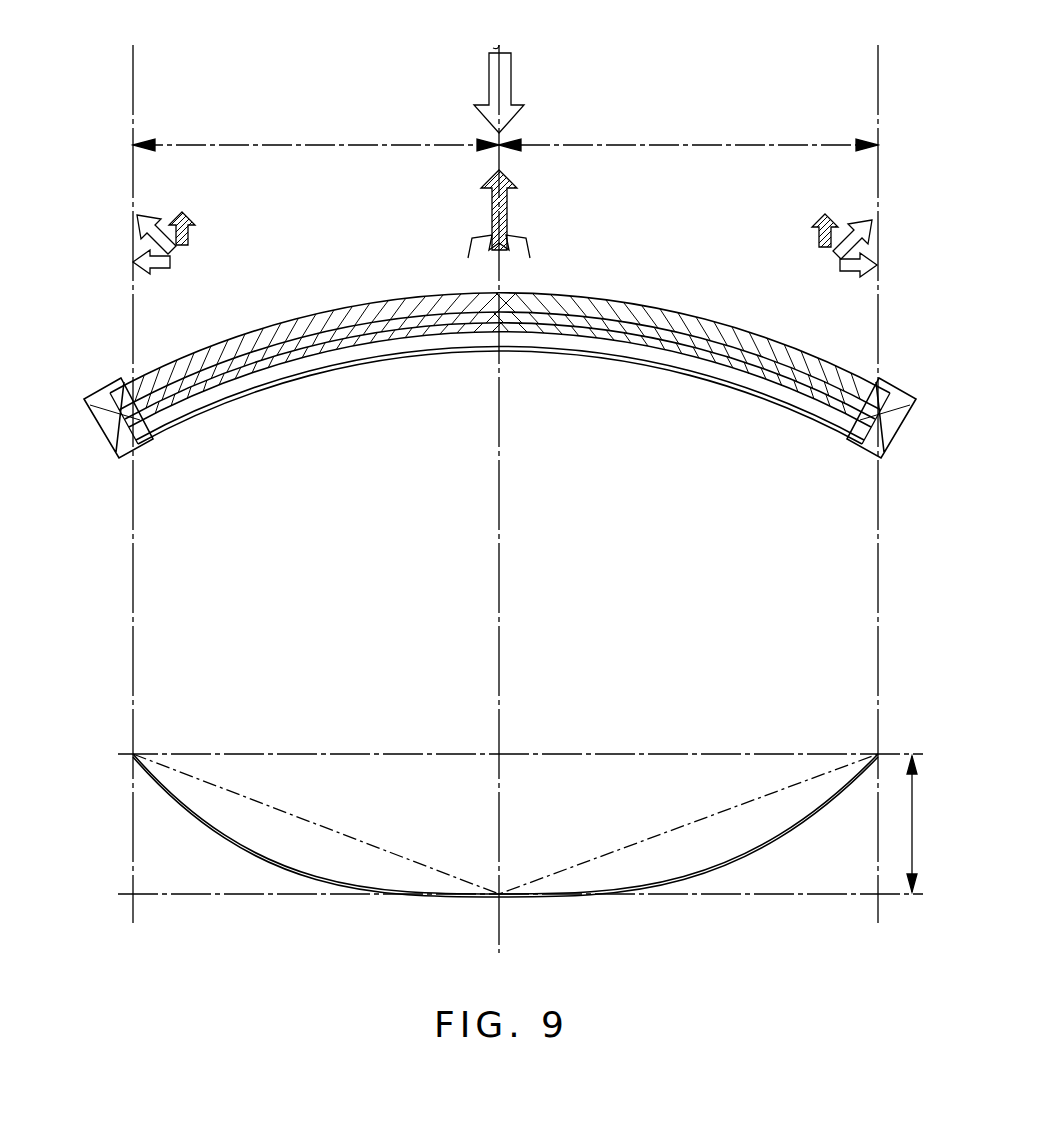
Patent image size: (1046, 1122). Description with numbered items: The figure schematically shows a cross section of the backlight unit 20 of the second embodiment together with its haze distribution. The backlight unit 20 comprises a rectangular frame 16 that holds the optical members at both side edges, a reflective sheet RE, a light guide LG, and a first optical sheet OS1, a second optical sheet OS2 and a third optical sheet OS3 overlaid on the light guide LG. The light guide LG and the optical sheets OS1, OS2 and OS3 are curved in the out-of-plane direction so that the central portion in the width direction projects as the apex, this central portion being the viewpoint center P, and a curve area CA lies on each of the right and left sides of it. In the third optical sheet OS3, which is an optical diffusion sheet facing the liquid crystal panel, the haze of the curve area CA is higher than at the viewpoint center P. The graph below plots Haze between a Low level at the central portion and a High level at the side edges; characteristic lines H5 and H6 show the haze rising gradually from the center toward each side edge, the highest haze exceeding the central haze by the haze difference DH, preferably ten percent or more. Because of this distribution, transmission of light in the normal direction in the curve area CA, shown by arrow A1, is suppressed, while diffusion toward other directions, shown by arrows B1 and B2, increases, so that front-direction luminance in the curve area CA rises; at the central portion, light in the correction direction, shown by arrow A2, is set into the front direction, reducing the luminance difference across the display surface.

The frame 16 is at (98, 418).
The backlight unit 20 is at (182, 432).
The curve area CA is at (505, 134).
The viewpoint center P is at (468, 936).
The arrow A1 is at (152, 212).
The arrow A2 is at (510, 205).
The arrow B1 is at (192, 222).
The arrow B2 is at (152, 272).
The light guide LG is at (231, 368).
The reflective sheet RE is at (310, 374).
The first optical sheet OS1 is at (750, 366).
The second optical sheet OS2 is at (682, 342).
The third optical sheet OS3 is at (566, 304).
The high haze level High is at (492, 756).
The haze axis Haze is at (85, 826).
The low haze level Low is at (493, 892).
The characteristic line H5 is at (250, 850).
The characteristic line H6 is at (304, 820).
The haze difference DH is at (927, 824).